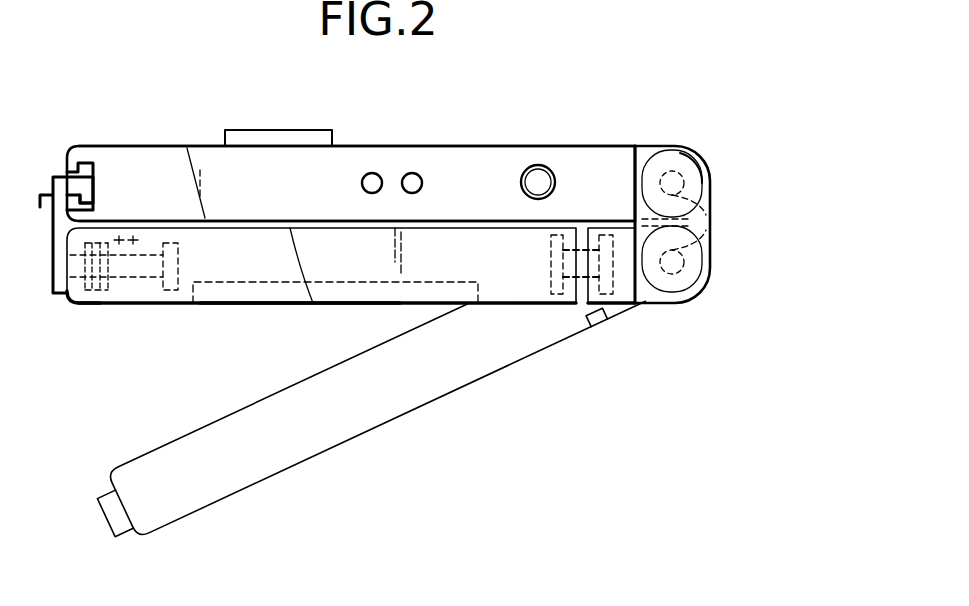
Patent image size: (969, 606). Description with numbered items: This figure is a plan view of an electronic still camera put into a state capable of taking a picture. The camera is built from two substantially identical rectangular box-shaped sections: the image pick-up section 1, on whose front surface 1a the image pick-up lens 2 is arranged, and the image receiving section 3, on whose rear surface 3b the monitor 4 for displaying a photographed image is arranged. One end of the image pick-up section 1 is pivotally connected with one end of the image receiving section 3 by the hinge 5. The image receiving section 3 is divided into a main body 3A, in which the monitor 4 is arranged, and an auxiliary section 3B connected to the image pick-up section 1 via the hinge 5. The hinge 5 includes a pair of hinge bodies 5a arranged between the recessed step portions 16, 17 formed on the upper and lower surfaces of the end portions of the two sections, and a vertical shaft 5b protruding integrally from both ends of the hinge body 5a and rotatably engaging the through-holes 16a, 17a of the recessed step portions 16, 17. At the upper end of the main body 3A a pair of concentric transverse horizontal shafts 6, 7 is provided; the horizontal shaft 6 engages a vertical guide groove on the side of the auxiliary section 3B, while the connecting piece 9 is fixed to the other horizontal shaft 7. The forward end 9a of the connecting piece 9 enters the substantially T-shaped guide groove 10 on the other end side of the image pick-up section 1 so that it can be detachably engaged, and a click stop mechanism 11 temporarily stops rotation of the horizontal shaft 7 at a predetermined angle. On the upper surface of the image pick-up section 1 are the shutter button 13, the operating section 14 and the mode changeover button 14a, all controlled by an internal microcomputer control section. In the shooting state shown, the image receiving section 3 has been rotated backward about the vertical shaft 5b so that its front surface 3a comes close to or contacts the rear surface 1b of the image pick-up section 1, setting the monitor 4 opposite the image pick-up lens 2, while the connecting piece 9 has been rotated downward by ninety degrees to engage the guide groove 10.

The image pick-up section 1 is at (168, 146).
The front surface 1a is at (461, 146).
The rear surface 1b is at (497, 214).
The image pick-up lens 2 is at (284, 130).
The image receiving section 3 is at (361, 357).
The main body of the image receiving section 3A is at (547, 316).
The auxiliary section 3B is at (613, 328).
The front surface 3a is at (313, 304).
The rear surface 3b is at (283, 304).
The monitor 4 is at (225, 283).
The hinge 5 is at (702, 209).
The hinge body 5a is at (688, 166).
The vertical shaft 5b is at (672, 170).
The horizontal shaft 6 is at (560, 263).
The horizontal shaft 7 is at (138, 243).
The connecting piece 9 is at (50, 212).
The forward end of the connecting piece 9a is at (96, 183).
The guide groove 10 is at (87, 162).
The click stop mechanism 11 is at (86, 310).
The shutter button 13 is at (556, 182).
The operating section 14 is at (360, 183).
The mode changeover button 14a is at (412, 173).
The recessed step portion 16 is at (643, 149).
The through-hole 16a is at (704, 196).
The recessed step portion 17 is at (648, 292).
The through-hole 17a is at (704, 252).